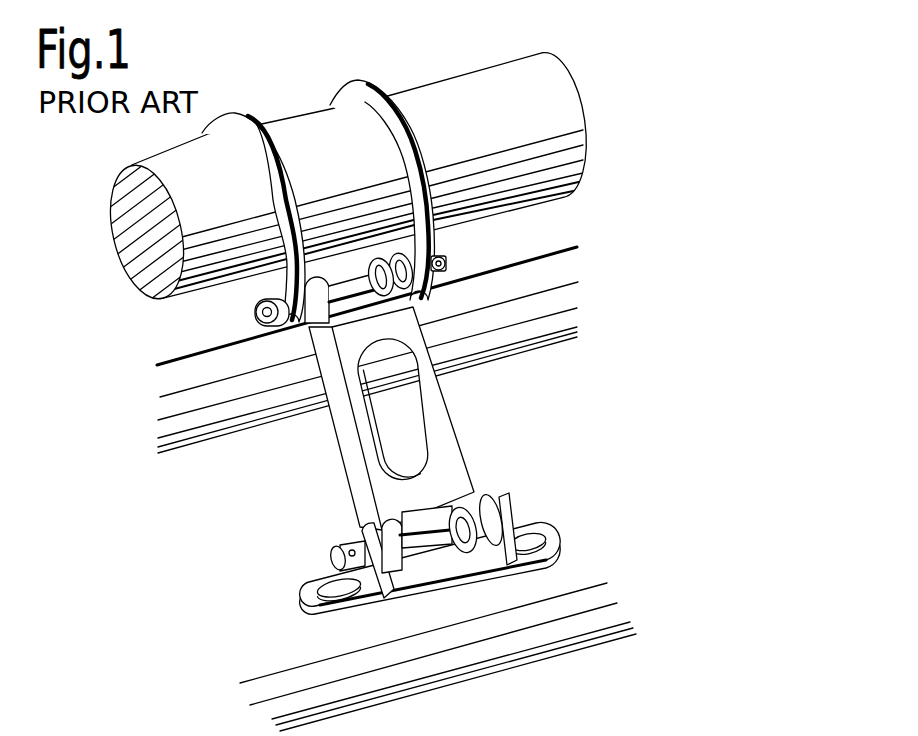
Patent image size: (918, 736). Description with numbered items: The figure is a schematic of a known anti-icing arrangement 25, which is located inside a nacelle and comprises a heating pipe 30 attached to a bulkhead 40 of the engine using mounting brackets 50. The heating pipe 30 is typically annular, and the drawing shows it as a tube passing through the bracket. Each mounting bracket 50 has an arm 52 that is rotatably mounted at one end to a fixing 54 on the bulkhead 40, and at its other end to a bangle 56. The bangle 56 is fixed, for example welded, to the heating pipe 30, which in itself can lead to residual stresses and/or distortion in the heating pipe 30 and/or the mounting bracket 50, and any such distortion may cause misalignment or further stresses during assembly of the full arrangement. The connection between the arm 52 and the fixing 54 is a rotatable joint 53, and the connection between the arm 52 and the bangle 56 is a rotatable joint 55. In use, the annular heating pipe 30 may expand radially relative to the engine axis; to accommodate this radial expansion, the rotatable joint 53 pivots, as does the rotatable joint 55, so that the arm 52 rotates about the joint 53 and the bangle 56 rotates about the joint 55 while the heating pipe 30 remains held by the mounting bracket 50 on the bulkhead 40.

The anti-icing arrangement 25 is at (635, 293).
The heating pipe 30 is at (195, 197).
The bulkhead 40 is at (582, 602).
The mounting bracket 50 is at (420, 363).
The arm 52 is at (423, 393).
The rotatable joint 53 is at (425, 533).
The fixing 54 is at (557, 538).
The rotatable joint 55 is at (350, 287).
The bangle 56 is at (364, 95).